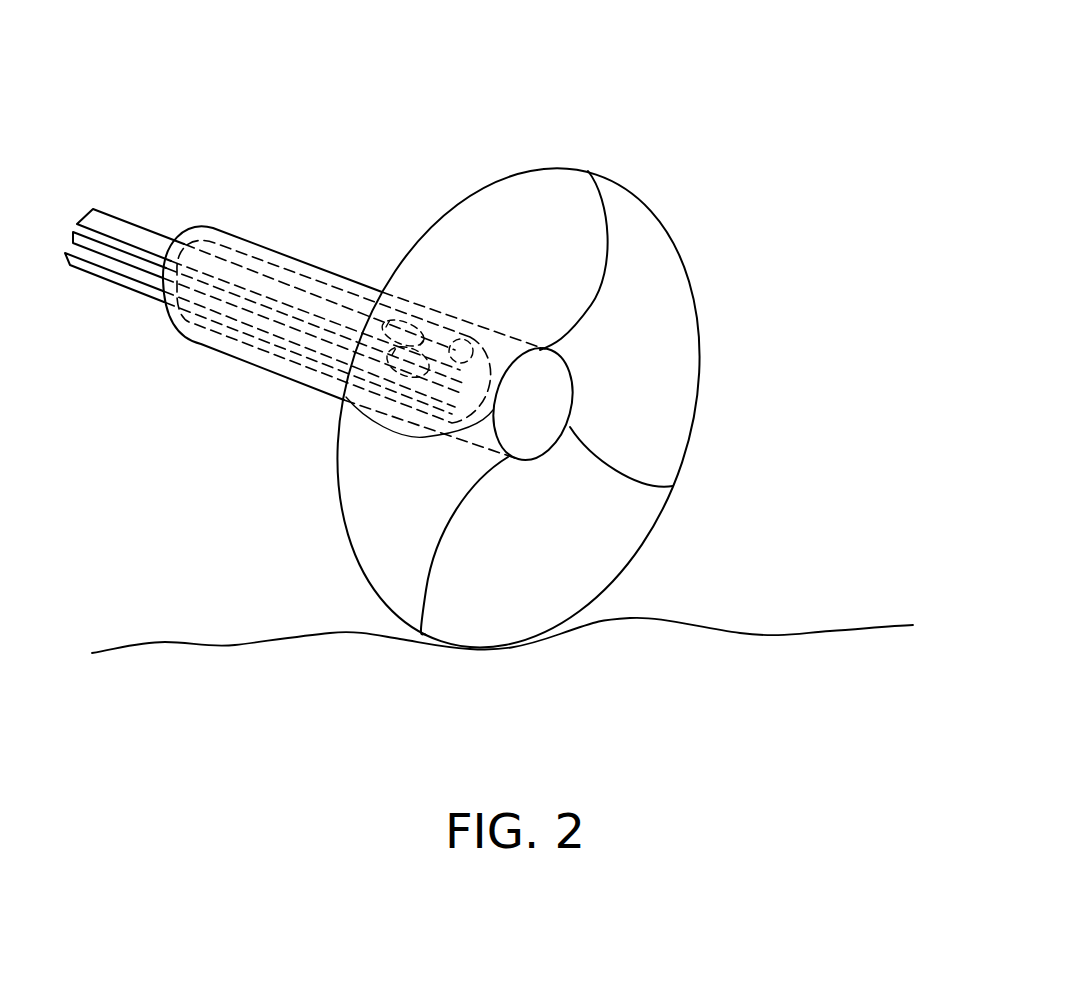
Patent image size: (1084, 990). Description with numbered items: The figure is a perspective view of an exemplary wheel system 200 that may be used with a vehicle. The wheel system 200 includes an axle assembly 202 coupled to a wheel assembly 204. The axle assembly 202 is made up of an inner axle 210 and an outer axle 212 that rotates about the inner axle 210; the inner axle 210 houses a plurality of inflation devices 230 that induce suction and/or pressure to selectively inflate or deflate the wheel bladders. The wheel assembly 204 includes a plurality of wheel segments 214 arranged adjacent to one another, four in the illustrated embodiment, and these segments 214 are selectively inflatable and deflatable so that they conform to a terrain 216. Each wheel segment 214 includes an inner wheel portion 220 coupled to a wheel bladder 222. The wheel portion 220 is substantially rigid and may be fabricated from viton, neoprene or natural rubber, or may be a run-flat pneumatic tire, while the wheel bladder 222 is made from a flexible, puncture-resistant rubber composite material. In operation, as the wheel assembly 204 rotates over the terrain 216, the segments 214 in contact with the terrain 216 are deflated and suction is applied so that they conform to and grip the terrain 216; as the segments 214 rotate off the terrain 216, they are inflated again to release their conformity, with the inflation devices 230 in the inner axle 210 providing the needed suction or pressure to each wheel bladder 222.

The wheel system 200 is at (420, 98).
The axle assembly 202 is at (256, 399).
The wheel assembly 204 is at (694, 228).
The inner axle 210 is at (244, 250).
The outer axle 212 is at (306, 262).
The wheel segments 214 is at (528, 152).
The terrain 216 is at (458, 722).
The inner wheel portion 220 is at (560, 210).
The wheel bladder 222 is at (686, 325).
The inflation devices 230 is at (104, 210).